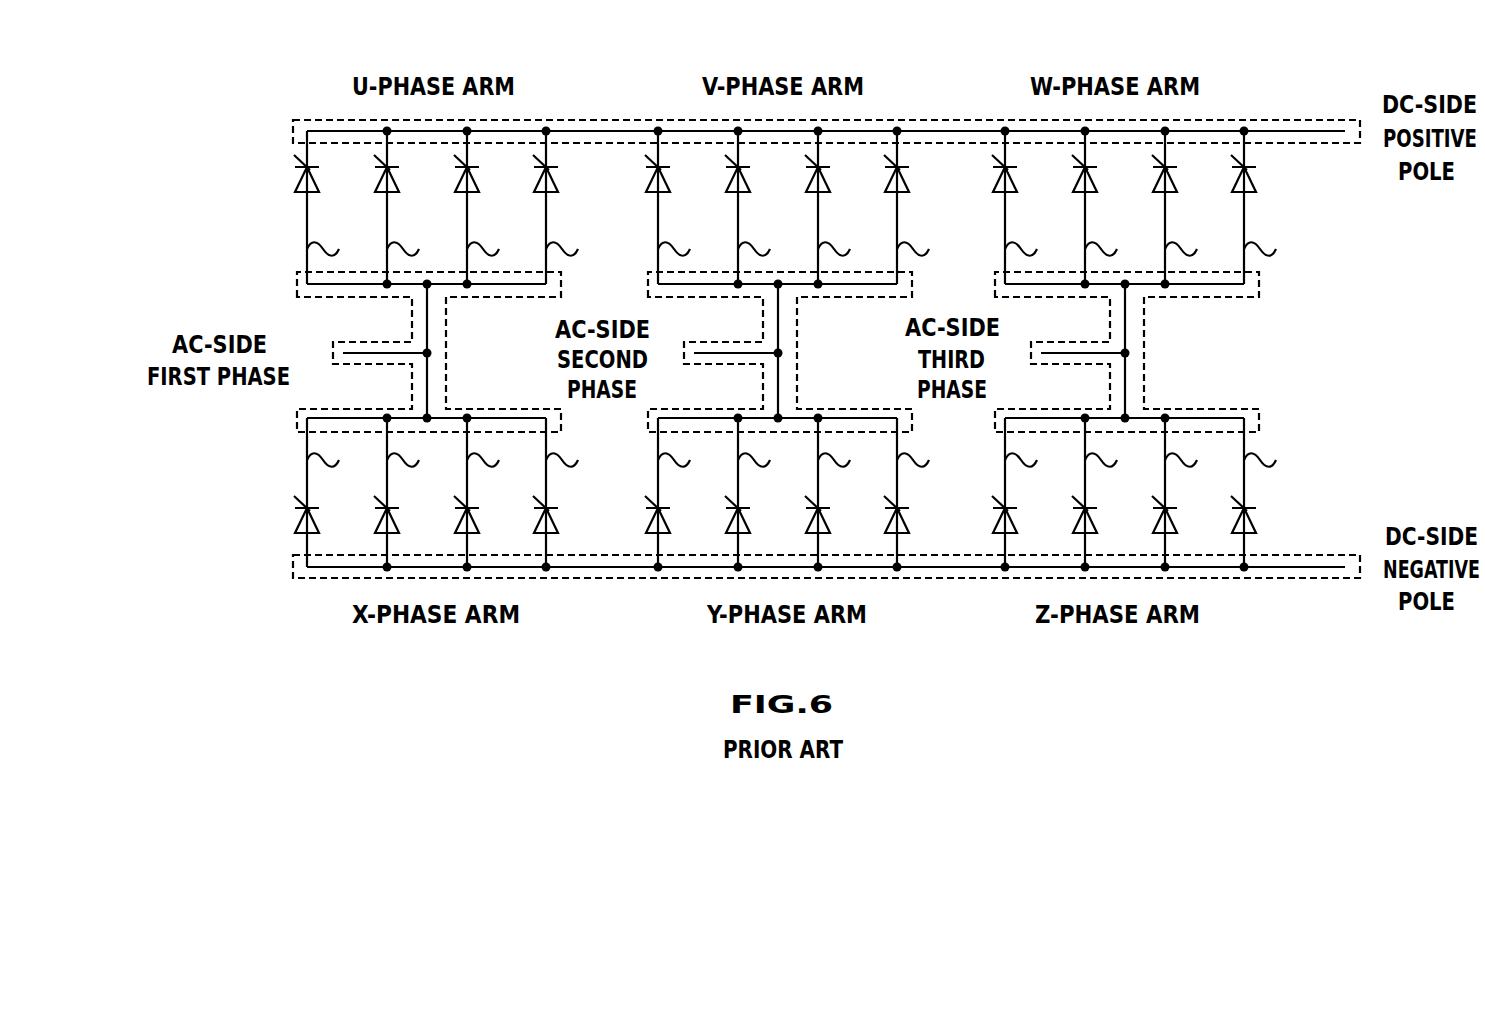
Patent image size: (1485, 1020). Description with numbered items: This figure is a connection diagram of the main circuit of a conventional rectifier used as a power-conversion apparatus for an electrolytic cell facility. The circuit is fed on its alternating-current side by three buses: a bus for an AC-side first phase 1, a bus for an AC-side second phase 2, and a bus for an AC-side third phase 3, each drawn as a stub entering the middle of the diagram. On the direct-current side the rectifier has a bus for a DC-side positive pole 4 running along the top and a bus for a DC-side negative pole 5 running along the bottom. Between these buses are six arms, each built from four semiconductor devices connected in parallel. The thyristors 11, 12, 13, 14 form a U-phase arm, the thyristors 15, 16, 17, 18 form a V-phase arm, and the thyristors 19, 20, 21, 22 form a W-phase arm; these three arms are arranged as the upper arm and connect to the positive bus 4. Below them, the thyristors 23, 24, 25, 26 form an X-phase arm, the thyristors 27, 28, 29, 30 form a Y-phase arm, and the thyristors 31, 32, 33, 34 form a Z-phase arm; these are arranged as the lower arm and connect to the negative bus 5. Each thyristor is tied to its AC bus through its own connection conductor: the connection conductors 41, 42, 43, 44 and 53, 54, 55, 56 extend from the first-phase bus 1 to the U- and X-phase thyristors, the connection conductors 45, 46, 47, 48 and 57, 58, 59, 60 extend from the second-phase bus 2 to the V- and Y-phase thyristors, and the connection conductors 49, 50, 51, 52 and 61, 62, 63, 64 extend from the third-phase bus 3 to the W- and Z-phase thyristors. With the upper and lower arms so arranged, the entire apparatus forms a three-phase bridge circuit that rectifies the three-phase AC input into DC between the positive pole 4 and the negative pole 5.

The bus for AC-side first phase 1 is at (447, 355).
The bus for AC-side second phase 2 is at (798, 355).
The bus for AC-side third phase 3 is at (1145, 355).
The bus for DC-side positive pole 4 is at (1293, 117).
The bus for DC-side negative pole 5 is at (1290, 580).
The thyristor 11 is at (301, 183).
The thyristor 12 is at (381, 183).
The thyristor 13 is at (461, 183).
The thyristor 14 is at (540, 183).
The thyristor 15 is at (652, 183).
The thyristor 16 is at (732, 183).
The thyristor 17 is at (812, 183).
The thyristor 18 is at (891, 183).
The thyristor 19 is at (999, 183).
The thyristor 20 is at (1079, 183).
The thyristor 21 is at (1159, 183).
The thyristor 22 is at (1238, 183).
The thyristor 23 is at (301, 519).
The thyristor 24 is at (381, 519).
The thyristor 25 is at (461, 519).
The thyristor 26 is at (540, 519).
The thyristor 27 is at (652, 519).
The thyristor 28 is at (732, 519).
The thyristor 29 is at (812, 519).
The thyristor 30 is at (891, 519).
The thyristor 31 is at (999, 519).
The thyristor 32 is at (1079, 519).
The thyristor 33 is at (1159, 519).
The thyristor 34 is at (1238, 519).
The connection conductor 41 is at (341, 249).
The connection conductor 42 is at (421, 249).
The connection conductor 43 is at (501, 249).
The connection conductor 44 is at (580, 249).
The connection conductor 45 is at (692, 249).
The connection conductor 46 is at (772, 249).
The connection conductor 47 is at (852, 249).
The connection conductor 48 is at (931, 249).
The connection conductor 49 is at (1039, 249).
The connection conductor 50 is at (1119, 249).
The connection conductor 51 is at (1199, 249).
The connection conductor 52 is at (1278, 249).
The connection conductor 53 is at (341, 461).
The connection conductor 54 is at (421, 461).
The connection conductor 55 is at (501, 461).
The connection conductor 56 is at (580, 461).
The connection conductor 57 is at (692, 461).
The connection conductor 58 is at (772, 461).
The connection conductor 59 is at (852, 461).
The connection conductor 60 is at (931, 461).
The connection conductor 61 is at (1039, 461).
The connection conductor 62 is at (1119, 461).
The connection conductor 63 is at (1199, 461).
The connection conductor 64 is at (1278, 461).